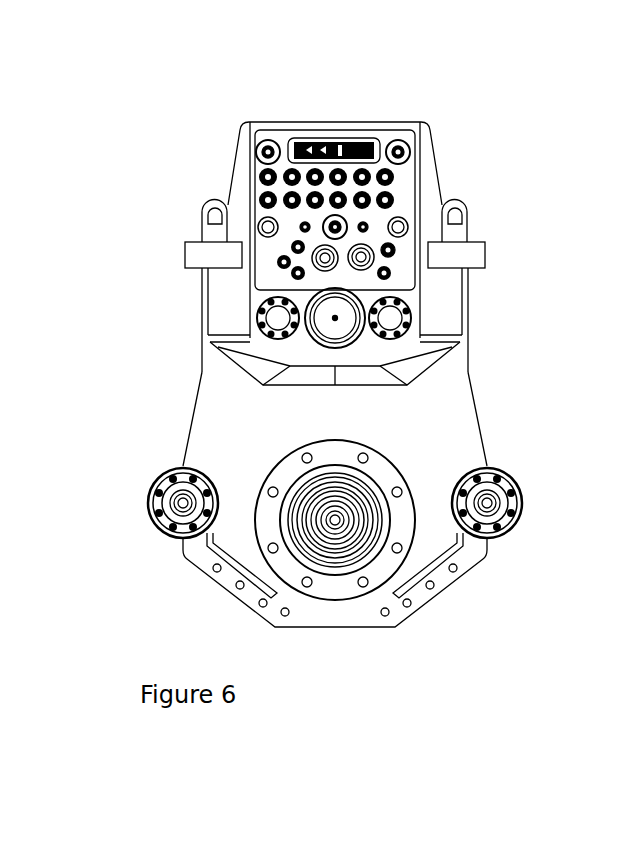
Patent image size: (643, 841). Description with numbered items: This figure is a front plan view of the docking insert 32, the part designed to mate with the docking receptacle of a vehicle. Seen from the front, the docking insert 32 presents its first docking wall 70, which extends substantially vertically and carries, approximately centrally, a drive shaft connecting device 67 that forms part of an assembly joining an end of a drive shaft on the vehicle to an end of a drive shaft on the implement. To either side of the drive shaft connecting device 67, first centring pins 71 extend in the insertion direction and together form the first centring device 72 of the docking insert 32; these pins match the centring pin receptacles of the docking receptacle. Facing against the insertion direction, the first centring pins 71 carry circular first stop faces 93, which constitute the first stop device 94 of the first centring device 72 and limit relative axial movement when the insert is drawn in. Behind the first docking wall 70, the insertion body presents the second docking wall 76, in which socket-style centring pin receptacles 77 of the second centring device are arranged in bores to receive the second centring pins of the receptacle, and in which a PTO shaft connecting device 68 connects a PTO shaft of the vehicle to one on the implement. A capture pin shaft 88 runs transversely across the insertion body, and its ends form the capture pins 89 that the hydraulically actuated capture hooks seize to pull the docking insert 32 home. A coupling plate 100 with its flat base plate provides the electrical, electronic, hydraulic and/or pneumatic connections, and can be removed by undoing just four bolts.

The docking insert 32 is at (163, 590).
The drive shaft connecting device 67 is at (375, 548).
The PTO shaft connecting device 68 is at (403, 247).
The first docking wall 70 is at (317, 447).
The first centring pins 71 is at (515, 513).
The first centring device 72 is at (487, 503).
The second docking wall 76 is at (350, 312).
The centring pin receptacles 77 is at (262, 320).
The capture pin shaft 88 is at (468, 252).
The capture pins 89 is at (335, 233).
The first stop faces 93 is at (505, 532).
The first stop device 94 is at (487, 503).
The coupling plate 100 is at (402, 185).